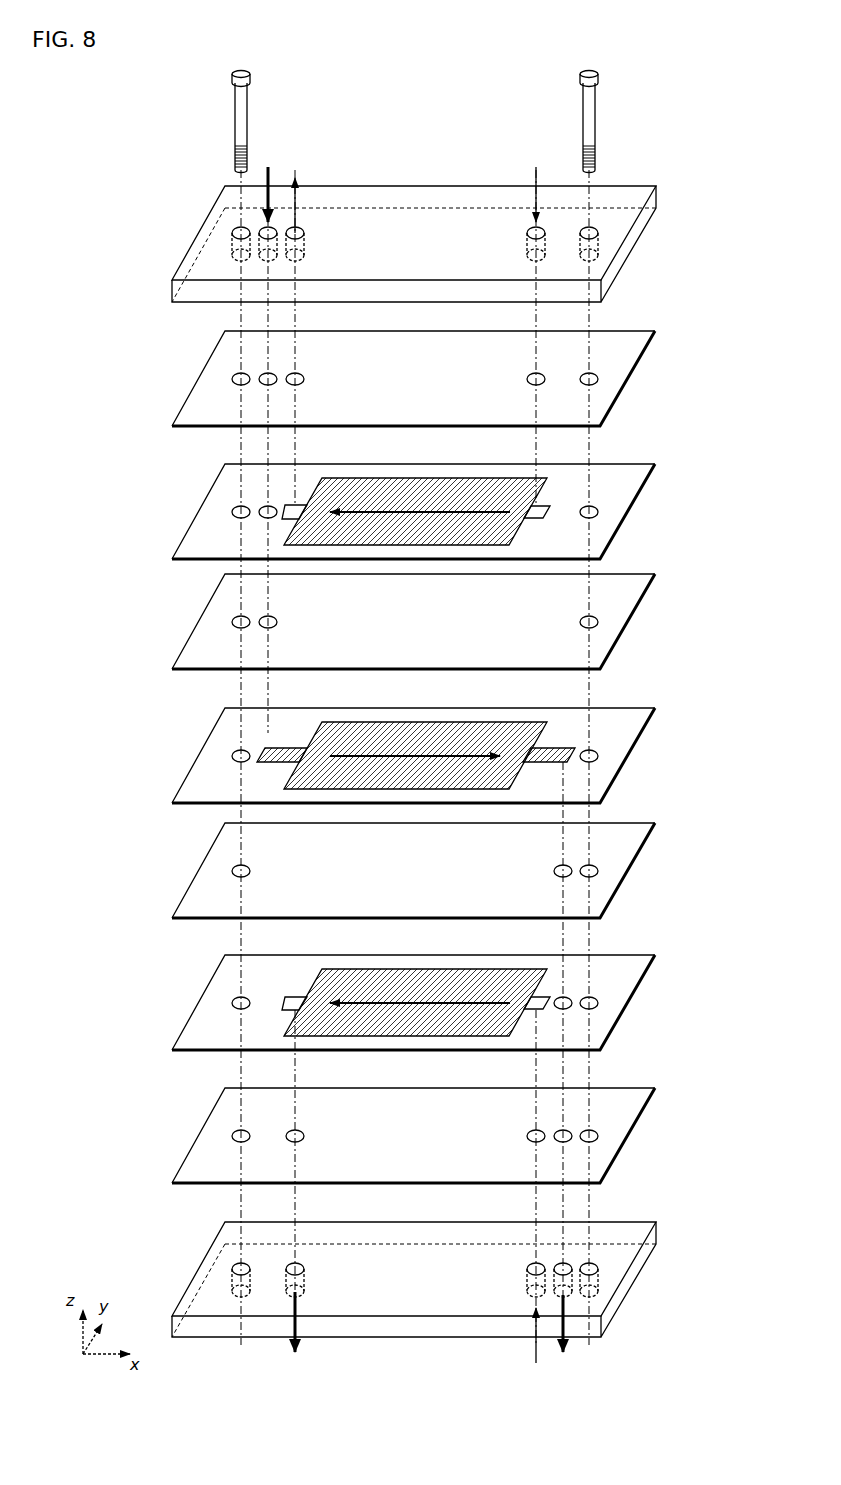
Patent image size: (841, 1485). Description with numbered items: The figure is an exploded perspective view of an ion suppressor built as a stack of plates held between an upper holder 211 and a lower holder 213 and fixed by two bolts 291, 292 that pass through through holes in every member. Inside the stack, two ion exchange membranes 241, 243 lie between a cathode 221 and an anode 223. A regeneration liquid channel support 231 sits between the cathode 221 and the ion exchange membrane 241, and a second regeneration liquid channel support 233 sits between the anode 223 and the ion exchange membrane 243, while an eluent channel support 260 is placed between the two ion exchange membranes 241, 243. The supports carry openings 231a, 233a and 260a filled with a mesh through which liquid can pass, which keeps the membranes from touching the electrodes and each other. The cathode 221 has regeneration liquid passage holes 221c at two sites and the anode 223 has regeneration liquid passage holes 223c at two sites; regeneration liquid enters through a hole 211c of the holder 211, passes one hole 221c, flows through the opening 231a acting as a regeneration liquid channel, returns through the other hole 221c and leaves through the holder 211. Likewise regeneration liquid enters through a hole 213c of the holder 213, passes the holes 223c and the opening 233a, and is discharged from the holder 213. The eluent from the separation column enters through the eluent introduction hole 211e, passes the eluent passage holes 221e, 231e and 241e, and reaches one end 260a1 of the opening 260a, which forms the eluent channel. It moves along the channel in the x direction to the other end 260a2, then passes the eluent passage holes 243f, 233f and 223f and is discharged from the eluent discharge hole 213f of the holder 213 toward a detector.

The bolt 291 is at (245, 110).
The bolt 292 is at (593, 110).
The holder 211 is at (628, 240).
The eluent introduction hole 211e is at (262, 229).
The regeneration liquid introduction/discharge holes 211c is at (527, 232).
The cathode 221 is at (628, 366).
The eluent passage hole 221e is at (262, 376).
The regeneration liquid passage holes 221c is at (527, 381).
The regeneration liquid channel support 231 is at (628, 505).
The eluent passage hole 231e is at (262, 509).
The opening 231a is at (388, 497).
The ion exchange membrane 241 is at (628, 617).
The eluent passage hole 241e is at (262, 620).
The eluent channel support 260 is at (628, 747).
The opening 260a is at (390, 740).
The end of opening 260a1 is at (285, 751).
The end of opening 260a2 is at (542, 752).
The ion exchange membrane 243 is at (628, 862).
The eluent passage hole 243f is at (568, 866).
The regeneration liquid channel support 233 is at (628, 995).
The opening 233a is at (388, 985).
The eluent passage hole 233f is at (568, 998).
The anode 223 is at (628, 1127).
The regeneration liquid passage holes 223c is at (527, 1137).
The eluent passage hole 223f is at (568, 1130).
The holder 213 is at (628, 1277).
The regeneration liquid introduction/discharge holes 213c is at (527, 1268).
The eluent discharge hole 213f is at (568, 1264).